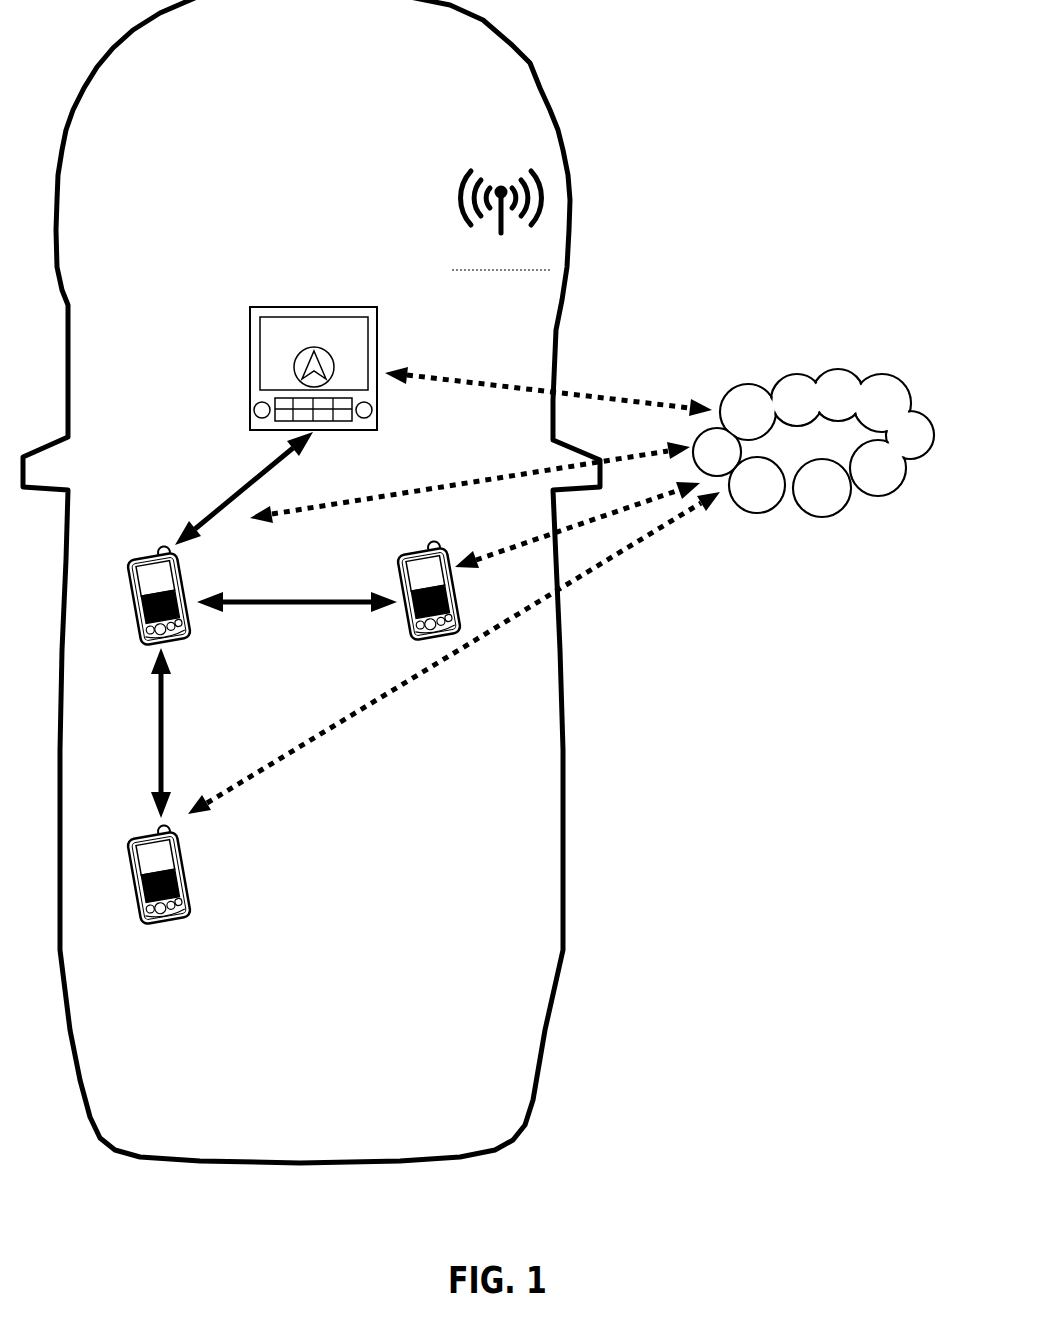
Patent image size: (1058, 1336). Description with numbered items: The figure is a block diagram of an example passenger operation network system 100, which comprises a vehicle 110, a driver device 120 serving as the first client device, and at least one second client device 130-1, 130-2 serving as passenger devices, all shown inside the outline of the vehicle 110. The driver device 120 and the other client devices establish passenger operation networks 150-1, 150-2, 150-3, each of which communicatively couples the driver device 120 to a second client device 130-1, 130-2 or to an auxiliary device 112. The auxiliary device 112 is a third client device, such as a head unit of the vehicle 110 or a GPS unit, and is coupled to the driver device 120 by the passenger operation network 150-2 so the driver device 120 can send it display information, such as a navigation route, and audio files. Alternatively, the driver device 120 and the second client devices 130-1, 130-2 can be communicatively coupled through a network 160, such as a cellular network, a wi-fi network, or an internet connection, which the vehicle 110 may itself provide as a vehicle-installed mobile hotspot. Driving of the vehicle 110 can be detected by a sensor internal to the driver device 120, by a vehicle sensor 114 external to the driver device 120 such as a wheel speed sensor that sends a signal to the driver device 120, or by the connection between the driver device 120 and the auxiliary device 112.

The passenger operation network system 100 is at (592, 45).
The vehicle 110 is at (565, 148).
The auxiliary device 112 is at (307, 307).
The vehicle sensor 114 is at (457, 175).
The driver device 120 is at (138, 557).
The second client device 130-1 is at (400, 625).
The second client device 130-2 is at (177, 907).
The passenger operation network 150-1 is at (297, 592).
The passenger operation network 150-2 is at (241, 488).
The passenger operation network 150-3 is at (193, 733).
The network 160 is at (813, 443).